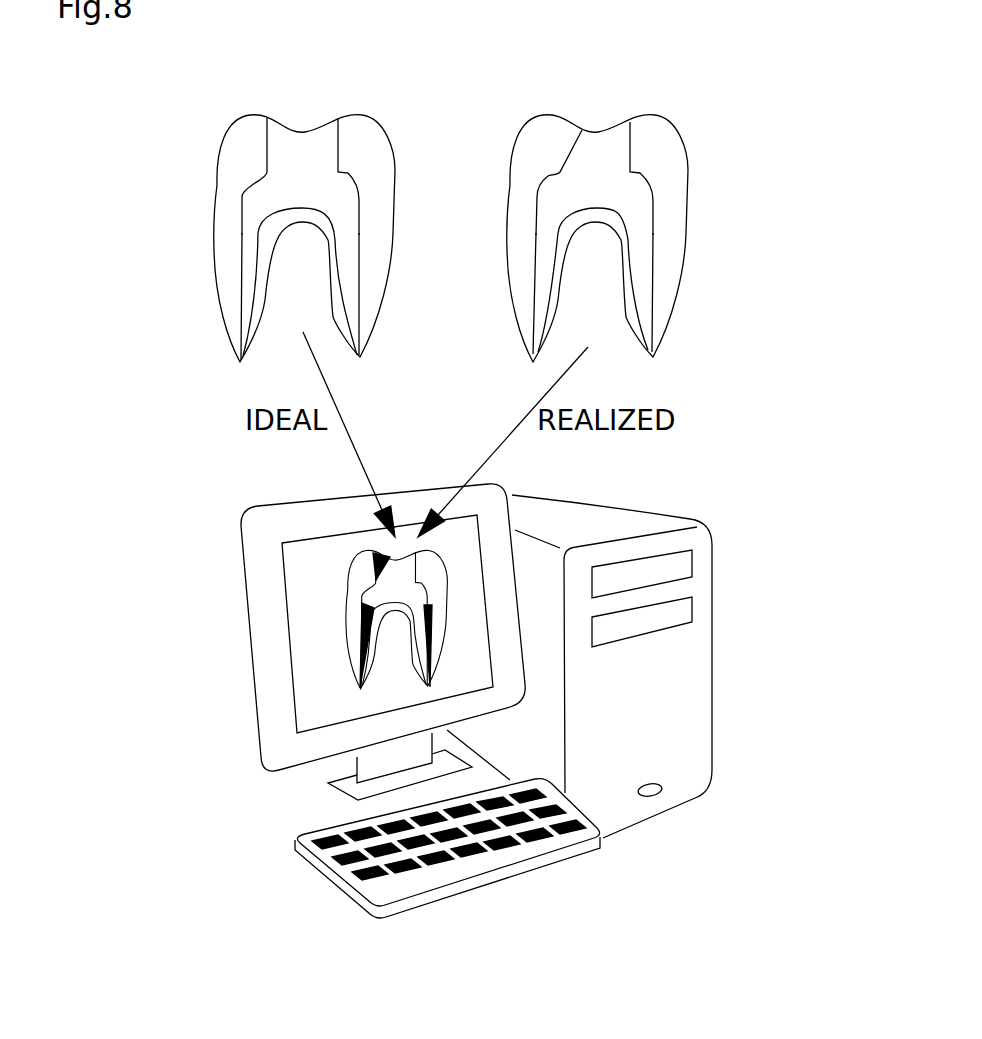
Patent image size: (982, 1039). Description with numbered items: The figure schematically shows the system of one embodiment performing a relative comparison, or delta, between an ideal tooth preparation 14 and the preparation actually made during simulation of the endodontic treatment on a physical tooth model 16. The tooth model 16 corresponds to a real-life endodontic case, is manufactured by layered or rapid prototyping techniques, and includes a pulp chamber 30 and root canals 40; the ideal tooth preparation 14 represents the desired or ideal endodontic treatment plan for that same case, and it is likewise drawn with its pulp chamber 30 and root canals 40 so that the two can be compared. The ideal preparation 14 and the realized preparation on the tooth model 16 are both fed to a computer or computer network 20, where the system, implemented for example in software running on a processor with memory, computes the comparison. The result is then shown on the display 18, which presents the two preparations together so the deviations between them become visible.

The ideal tooth model 14 is at (217, 185).
The realized tooth 16 is at (683, 220).
The pulp chamber access cavity 30 is at (294, 150).
The root canal 40 is at (248, 255).
The display monitor 18 is at (262, 643).
The computer 20 is at (647, 675).